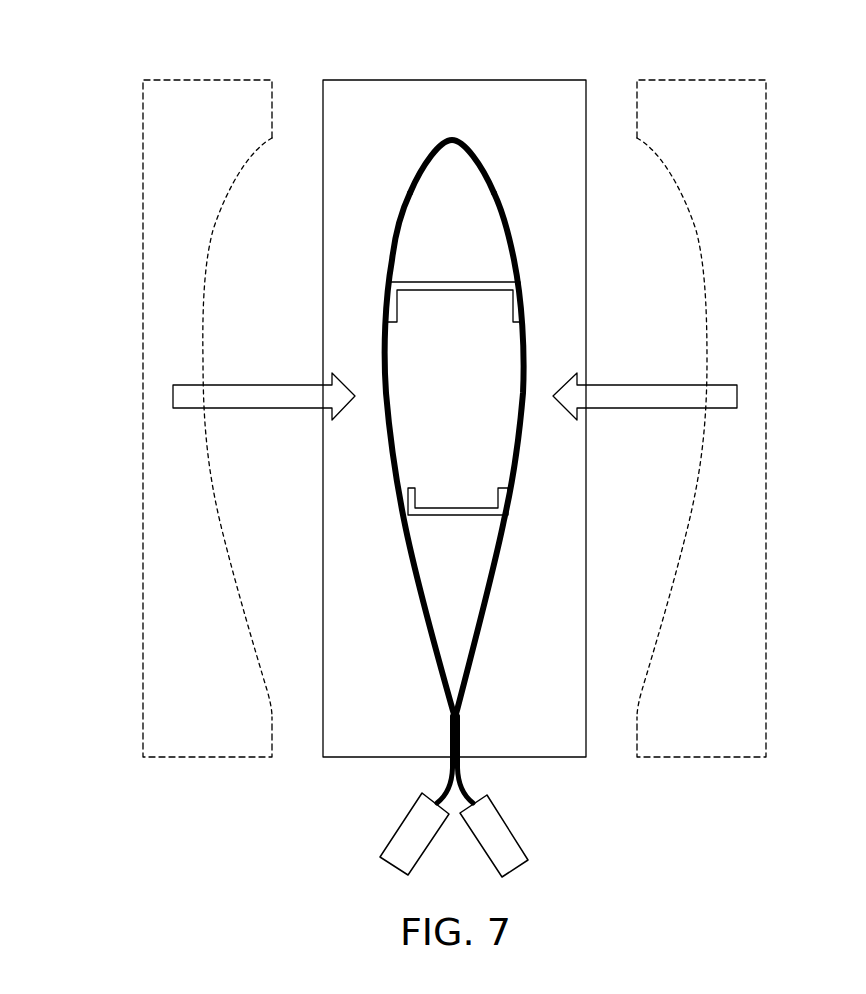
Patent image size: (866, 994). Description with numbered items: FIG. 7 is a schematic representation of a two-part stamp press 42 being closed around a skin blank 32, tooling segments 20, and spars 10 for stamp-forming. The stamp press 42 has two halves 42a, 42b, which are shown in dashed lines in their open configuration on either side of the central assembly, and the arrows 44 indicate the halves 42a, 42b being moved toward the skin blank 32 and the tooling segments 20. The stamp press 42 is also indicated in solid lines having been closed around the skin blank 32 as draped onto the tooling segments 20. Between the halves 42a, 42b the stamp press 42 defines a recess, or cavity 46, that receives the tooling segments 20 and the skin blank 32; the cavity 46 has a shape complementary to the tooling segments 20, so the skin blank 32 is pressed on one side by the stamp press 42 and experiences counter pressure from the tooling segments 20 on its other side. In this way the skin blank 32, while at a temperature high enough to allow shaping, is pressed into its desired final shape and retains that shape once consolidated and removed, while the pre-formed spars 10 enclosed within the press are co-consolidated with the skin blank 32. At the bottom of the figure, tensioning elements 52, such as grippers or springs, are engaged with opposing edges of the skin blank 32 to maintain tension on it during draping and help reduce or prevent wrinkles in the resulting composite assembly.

The spar 10 is at (457, 280).
The tooling segment 20 is at (483, 212).
The skin blank 32 is at (410, 193).
The stamp press 42 is at (550, 592).
The stamp press half 42a is at (193, 733).
The stamp press half 42b is at (713, 733).
The arrows 44 is at (195, 409).
The cavity 46 is at (207, 282).
The tensioning element 52 is at (532, 879).